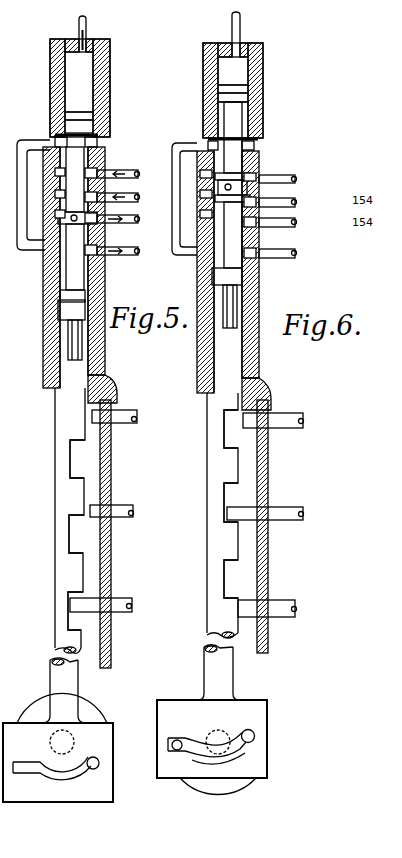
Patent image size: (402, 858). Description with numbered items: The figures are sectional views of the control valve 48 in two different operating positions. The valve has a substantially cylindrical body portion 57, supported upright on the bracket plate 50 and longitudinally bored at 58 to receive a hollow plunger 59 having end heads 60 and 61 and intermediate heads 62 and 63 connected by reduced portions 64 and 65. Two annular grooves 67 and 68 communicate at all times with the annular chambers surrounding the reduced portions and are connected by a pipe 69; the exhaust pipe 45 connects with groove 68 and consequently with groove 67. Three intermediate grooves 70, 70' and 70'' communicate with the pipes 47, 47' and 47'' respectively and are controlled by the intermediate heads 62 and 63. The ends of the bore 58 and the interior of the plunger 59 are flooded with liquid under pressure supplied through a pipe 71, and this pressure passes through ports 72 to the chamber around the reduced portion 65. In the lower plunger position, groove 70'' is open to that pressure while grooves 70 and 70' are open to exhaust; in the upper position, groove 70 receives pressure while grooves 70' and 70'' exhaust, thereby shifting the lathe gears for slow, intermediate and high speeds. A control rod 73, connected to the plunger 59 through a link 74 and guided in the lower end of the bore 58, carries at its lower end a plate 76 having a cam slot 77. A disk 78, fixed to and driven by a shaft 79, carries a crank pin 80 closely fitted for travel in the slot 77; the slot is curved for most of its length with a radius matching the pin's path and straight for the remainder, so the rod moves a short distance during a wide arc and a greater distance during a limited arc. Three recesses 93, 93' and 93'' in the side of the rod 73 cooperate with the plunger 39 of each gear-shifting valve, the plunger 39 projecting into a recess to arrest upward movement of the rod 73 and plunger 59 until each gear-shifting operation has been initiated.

In FIG. 5, the plunger 39 is at (134, 408).
In FIG. 6, the plunger 39 is at (300, 413).
In FIG. 5, the exhaust pipe 45 is at (136, 256).
In FIG. 6, the exhaust pipe 45 is at (294, 259).
In FIG. 5, the pipe 47 is at (128, 166).
In FIG. 6, the pipe 47 is at (294, 171).
In FIG. 5, the pipe 47' is at (130, 190).
In FIG. 6, the pipe 47' is at (294, 196).
In FIG. 5, the pipe 47'' is at (132, 211).
In FIG. 6, the pipe 47'' is at (297, 215).
In FIG. 5, the control valve 48 is at (64, 38).
In FIG. 6, the control valve 48 is at (220, 42).
In FIG. 5, the bracket plate 50 is at (108, 482).
In FIG. 6, the bracket plate 50 is at (268, 468).
In FIG. 5, the body portion 57 is at (55, 72).
In FIG. 6, the body portion 57 is at (208, 72).
In FIG. 5, the bore 58 is at (90, 85).
In FIG. 6, the bore 58 is at (241, 70).
In FIG. 5, the hollow plunger 59 is at (78, 115).
In FIG. 6, the hollow plunger 59 is at (227, 85).
In FIG. 5, the end head 60 is at (85, 126).
In FIG. 6, the end head 60 is at (240, 98).
In FIG. 5, the end head 61 is at (68, 308).
In FIG. 6, the end head 61 is at (222, 285).
In FIG. 5, the intermediate head 62 is at (77, 203).
In FIG. 6, the intermediate head 62 is at (229, 174).
In FIG. 5, the intermediate head 63 is at (75, 257).
In FIG. 6, the intermediate head 63 is at (232, 235).
In FIG. 5, the reduced portion 64 is at (80, 163).
In FIG. 6, the reduced portion 64 is at (234, 128).
In FIG. 5, the reduced portion 65 is at (96, 222).
In FIG. 6, the reduced portion 65 is at (246, 186).
In FIG. 5, the annular groove 67 is at (56, 136).
In FIG. 6, the annular groove 67 is at (210, 139).
In FIG. 5, the annular groove 68 is at (57, 216).
In FIG. 6, the annular groove 68 is at (232, 236).
In FIG. 5, the pipe 69 is at (20, 250).
In FIG. 6, the pipe 69 is at (174, 214).
In FIG. 5, the intermediate groove 70 is at (46, 165).
In FIG. 6, the intermediate groove 70 is at (197, 168).
In FIG. 5, the intermediate groove 70' is at (46, 188).
In FIG. 6, the intermediate groove 70' is at (197, 189).
In FIG. 5, the intermediate groove 70'' is at (46, 208).
In FIG. 6, the intermediate groove 70'' is at (197, 209).
In FIG. 5, the pipe 71 is at (87, 28).
In FIG. 6, the pipe 71 is at (241, 25).
In FIG. 5, the ports 72 is at (96, 193).
In FIG. 6, the ports 72 is at (256, 178).
In FIG. 5, the control rod 73 is at (62, 507).
In FIG. 6, the control rod 73 is at (215, 470).
In FIG. 5, the link 74 is at (72, 340).
In FIG. 6, the link 74 is at (230, 302).
In FIG. 5, the plate 76 is at (100, 791).
In FIG. 6, the plate 76 is at (255, 705).
In FIG. 5, the cam slot 77 is at (42, 766).
In FIG. 6, the cam slot 77 is at (245, 735).
In FIG. 5, the disk 78 is at (97, 715).
In FIG. 6, the disk 78 is at (236, 790).
In FIG. 6, the shaft 79 is at (215, 754).
In FIG. 5, the crank pin 80 is at (91, 757).
In FIG. 6, the crank pin 80 is at (177, 740).
In FIG. 5, the recess 93 is at (103, 459).
In FIG. 6, the recess 93 is at (263, 430).
In FIG. 5, the recess 93' is at (108, 535).
In FIG. 6, the recess 93' is at (271, 502).
In FIG. 5, the recess 93'' is at (112, 613).
In FIG. 6, the recess 93'' is at (265, 579).